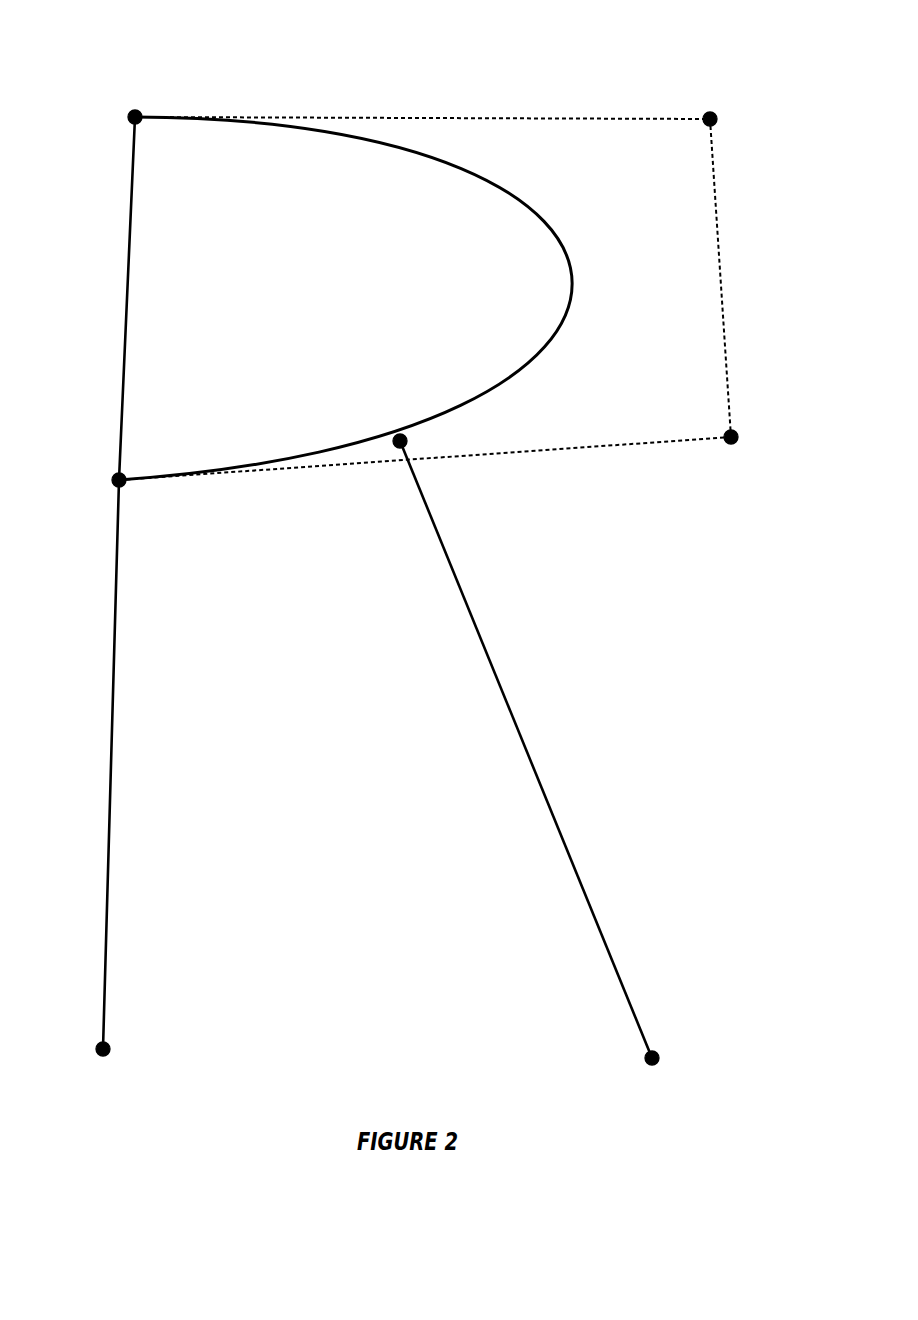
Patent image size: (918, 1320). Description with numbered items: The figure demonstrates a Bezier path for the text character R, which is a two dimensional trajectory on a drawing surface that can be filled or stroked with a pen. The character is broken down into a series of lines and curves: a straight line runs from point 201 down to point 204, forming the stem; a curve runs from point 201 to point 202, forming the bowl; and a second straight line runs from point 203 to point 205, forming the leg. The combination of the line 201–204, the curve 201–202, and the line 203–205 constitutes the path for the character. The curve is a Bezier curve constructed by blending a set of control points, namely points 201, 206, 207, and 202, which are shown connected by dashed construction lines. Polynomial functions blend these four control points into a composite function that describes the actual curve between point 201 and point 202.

The control point 201 is at (131, 111).
The control point 202 is at (115, 474).
The line endpoint 203 is at (407, 446).
The line endpoint 204 is at (99, 1042).
The line endpoint 205 is at (658, 1049).
The control point 206 is at (716, 112).
The control point 207 is at (737, 445).